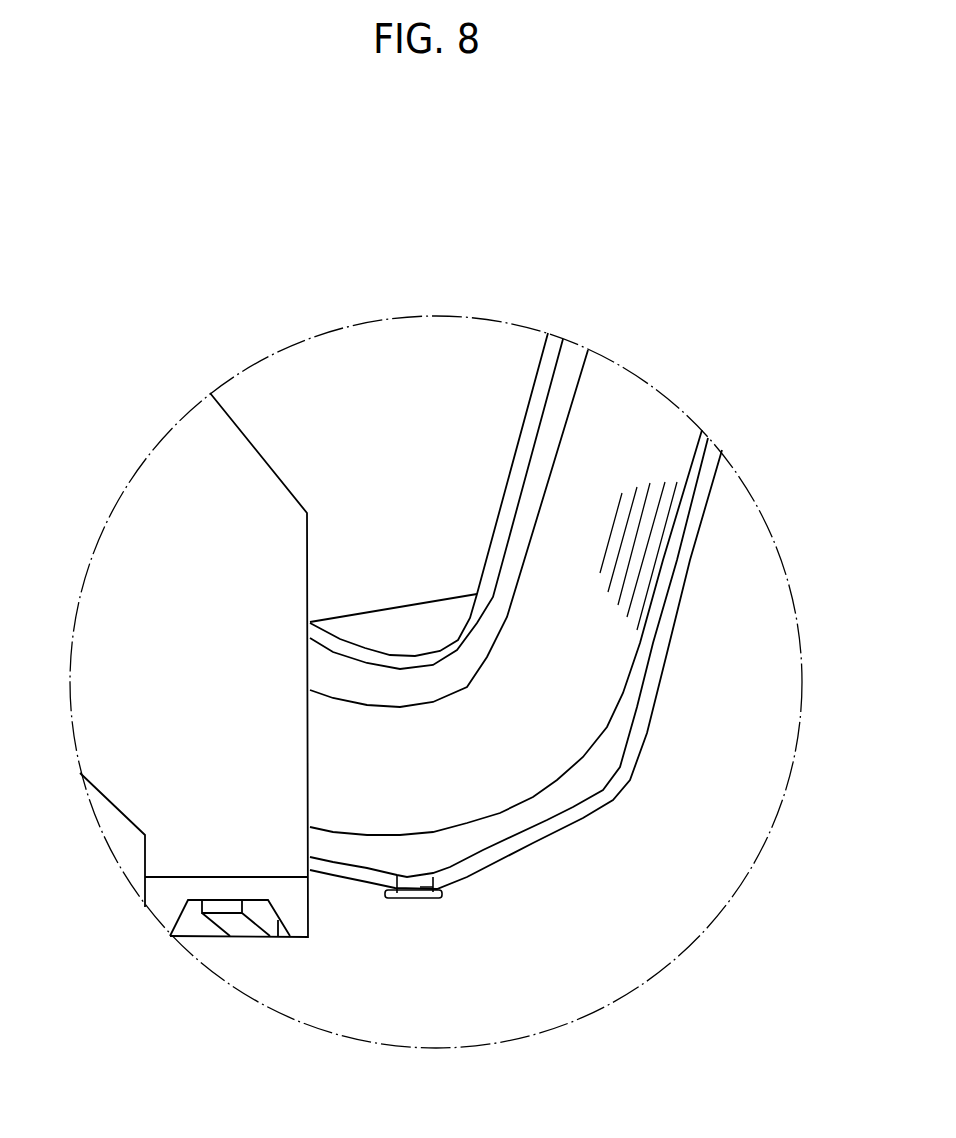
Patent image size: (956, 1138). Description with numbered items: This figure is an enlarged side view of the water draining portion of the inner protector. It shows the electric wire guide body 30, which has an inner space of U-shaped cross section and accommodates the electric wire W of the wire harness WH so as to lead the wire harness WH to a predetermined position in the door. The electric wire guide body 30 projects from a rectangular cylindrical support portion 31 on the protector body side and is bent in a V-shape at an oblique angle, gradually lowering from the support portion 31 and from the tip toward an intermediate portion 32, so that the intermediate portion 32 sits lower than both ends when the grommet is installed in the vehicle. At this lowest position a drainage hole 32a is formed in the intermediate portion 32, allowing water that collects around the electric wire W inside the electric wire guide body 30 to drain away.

The electric wire guide body 30 is at (667, 697).
The support portion 31 is at (251, 448).
The intermediate portion 32 is at (471, 877).
The drainage hole 32a is at (423, 895).
The electric wire W is at (637, 533).
The wire harness WH is at (573, 786).